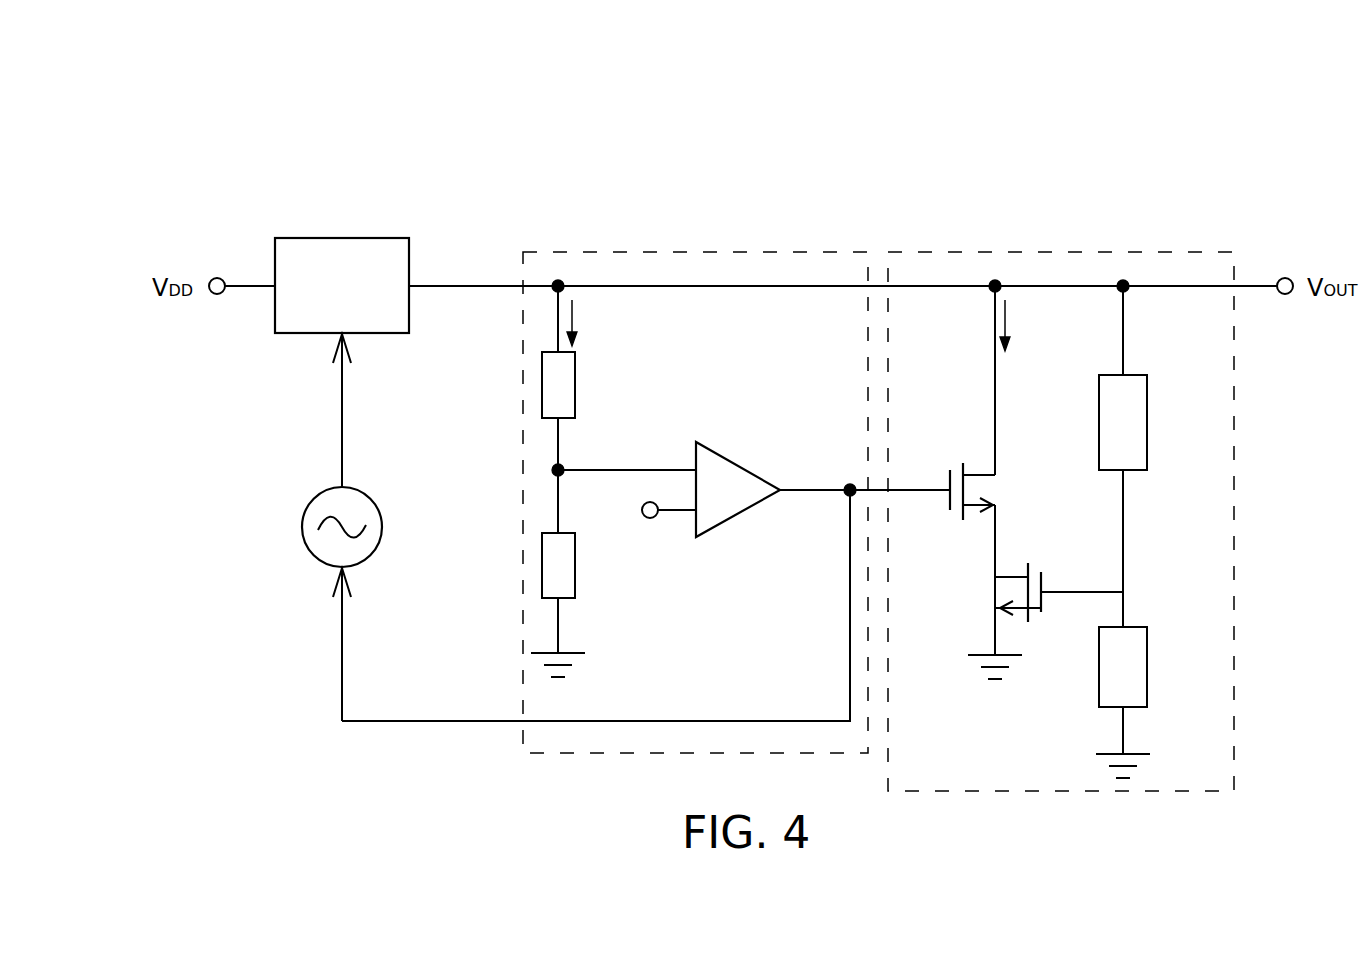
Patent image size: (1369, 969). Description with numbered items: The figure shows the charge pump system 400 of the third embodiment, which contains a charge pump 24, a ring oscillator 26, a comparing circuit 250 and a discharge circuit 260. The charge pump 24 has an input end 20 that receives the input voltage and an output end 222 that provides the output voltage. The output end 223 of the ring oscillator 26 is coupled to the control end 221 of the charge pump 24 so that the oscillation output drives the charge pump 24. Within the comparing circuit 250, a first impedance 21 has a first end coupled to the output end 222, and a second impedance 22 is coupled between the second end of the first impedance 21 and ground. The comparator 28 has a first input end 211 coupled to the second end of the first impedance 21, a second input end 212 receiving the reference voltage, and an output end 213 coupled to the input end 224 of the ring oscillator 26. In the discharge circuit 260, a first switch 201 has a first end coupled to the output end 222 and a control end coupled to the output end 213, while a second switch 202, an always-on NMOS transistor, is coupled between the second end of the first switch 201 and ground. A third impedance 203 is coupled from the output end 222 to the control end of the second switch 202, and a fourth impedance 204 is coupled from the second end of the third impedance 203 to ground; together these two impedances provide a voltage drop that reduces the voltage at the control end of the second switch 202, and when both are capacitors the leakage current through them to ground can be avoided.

The charge pump system 400 is at (1195, 125).
The input end 20 is at (217, 278).
The charge pump 24 is at (340, 238).
The output end 222 is at (411, 278).
The control end 221 is at (338, 345).
The output end 223 is at (340, 485).
The ring oscillator 26 is at (302, 527).
The input end 224 is at (338, 575).
The comparing circuit 250 is at (692, 251).
The first impedance 21 is at (577, 385).
The second impedance 22 is at (577, 566).
The comparator 28 is at (738, 458).
The first input end 211 is at (706, 456).
The second input end 212 is at (706, 525).
The output end 213 is at (782, 493).
The discharge circuit 260 is at (1057, 251).
The first switch 201 is at (955, 468).
The second switch 202 is at (1038, 570).
The third impedance 203 is at (1148, 422).
The fourth impedance 204 is at (1148, 659).